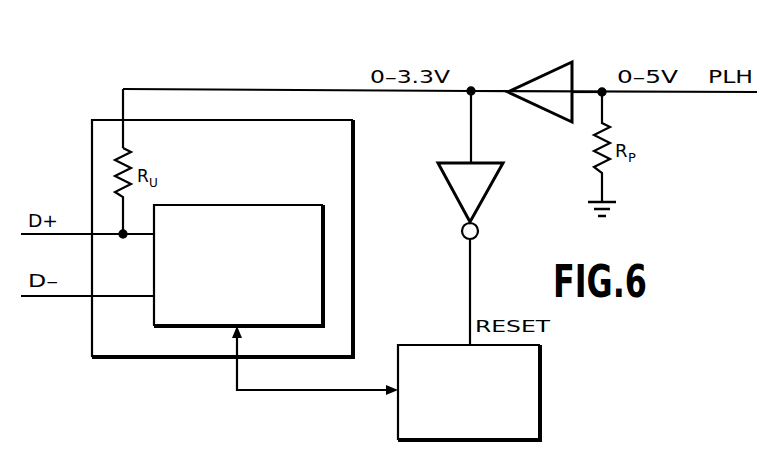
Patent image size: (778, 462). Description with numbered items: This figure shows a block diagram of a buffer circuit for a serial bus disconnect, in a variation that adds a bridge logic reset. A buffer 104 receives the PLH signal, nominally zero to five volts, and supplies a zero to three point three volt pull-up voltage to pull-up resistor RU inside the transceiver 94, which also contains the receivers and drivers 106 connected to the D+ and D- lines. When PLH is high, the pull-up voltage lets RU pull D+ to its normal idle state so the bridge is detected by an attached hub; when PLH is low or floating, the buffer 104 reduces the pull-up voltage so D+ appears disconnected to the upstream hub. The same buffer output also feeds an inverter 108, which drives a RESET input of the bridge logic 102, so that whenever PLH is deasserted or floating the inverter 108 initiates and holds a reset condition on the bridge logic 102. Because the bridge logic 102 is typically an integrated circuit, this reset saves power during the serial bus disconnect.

The transceiver 94 is at (239, 166).
The bridge logic 102 is at (492, 422).
The buffer 104 is at (539, 75).
The receivers and drivers 106 is at (262, 312).
The inverter 108 is at (453, 193).